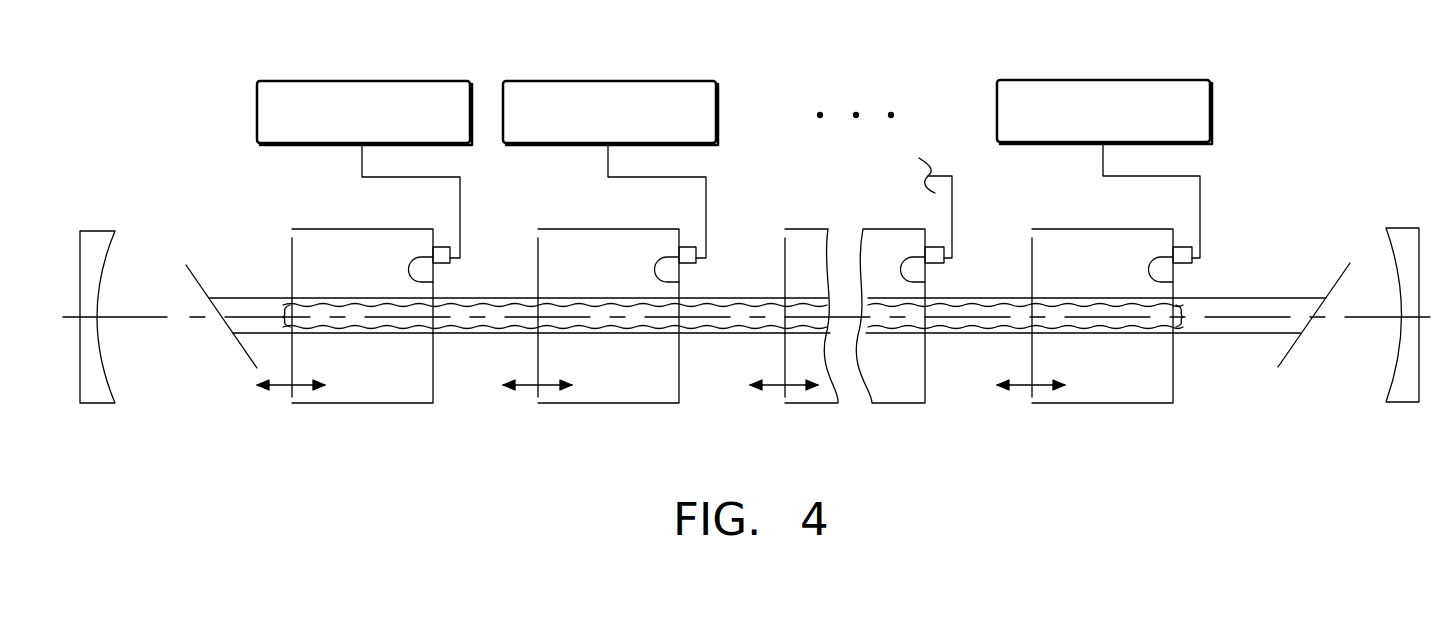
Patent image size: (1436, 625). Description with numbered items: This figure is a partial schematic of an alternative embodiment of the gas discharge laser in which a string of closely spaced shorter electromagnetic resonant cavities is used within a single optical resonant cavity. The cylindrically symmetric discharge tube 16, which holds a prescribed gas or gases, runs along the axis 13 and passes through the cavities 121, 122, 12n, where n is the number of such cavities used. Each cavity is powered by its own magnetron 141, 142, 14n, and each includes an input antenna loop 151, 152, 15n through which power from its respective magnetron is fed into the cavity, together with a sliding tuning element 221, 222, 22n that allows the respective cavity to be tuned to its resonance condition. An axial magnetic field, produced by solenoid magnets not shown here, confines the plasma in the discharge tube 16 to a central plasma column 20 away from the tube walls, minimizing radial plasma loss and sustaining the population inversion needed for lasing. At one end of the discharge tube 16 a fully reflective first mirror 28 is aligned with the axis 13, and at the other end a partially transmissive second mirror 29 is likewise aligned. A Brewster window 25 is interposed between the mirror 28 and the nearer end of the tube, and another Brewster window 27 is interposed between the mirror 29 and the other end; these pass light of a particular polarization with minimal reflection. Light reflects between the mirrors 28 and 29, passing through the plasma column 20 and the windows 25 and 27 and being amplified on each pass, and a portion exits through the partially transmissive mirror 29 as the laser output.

The axis 13 is at (76, 317).
The first mirror 28 is at (98, 403).
The Brewster window 25 is at (252, 366).
The discharge tube 16 is at (716, 334).
The plasma column 20 is at (382, 324).
The shorter cavity 121 is at (332, 349).
The shorter cavity 122 is at (580, 349).
The shorter cavity 12n is at (1074, 349).
The sliding tuning element 221 is at (292, 250).
The sliding tuning element 222 is at (538, 250).
The sliding tuning element 22n is at (1032, 250).
The input antenna loop 151 is at (401, 266).
The input antenna loop 152 is at (642, 262).
The input antenna loop 15n is at (1138, 262).
The magnetron 141 is at (362, 81).
The magnetron 142 is at (608, 81).
The magnetron 14n is at (1103, 80).
The Brewster window 27 is at (1304, 334).
The second mirror 29 is at (1400, 403).